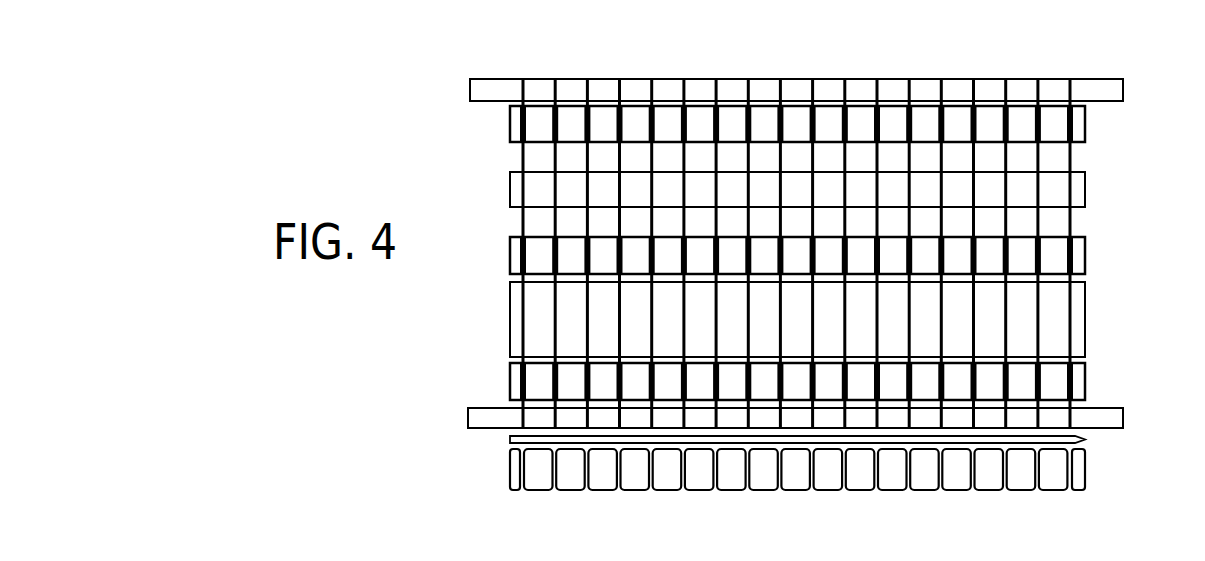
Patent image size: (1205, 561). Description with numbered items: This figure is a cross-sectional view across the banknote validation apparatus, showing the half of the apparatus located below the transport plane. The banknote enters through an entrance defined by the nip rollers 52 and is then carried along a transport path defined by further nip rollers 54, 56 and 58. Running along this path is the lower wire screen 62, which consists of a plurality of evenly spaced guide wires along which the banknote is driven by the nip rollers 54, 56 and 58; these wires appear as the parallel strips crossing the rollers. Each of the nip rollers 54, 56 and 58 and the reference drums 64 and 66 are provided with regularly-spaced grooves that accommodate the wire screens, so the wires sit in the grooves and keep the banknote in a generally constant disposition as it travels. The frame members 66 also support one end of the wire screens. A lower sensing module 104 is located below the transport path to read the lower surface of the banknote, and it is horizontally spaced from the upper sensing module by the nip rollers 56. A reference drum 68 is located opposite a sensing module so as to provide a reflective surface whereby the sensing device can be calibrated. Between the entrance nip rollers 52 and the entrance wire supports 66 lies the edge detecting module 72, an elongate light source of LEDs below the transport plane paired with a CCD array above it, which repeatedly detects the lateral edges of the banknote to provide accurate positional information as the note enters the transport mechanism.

The nip rollers 52 is at (1078, 470).
The nip rollers 54 is at (1078, 385).
The nip rollers 56 is at (1078, 258).
The nip rollers 58 is at (1078, 127).
The lower wire screen 62 is at (585, 222).
The reference drum 64 is at (1113, 81).
The frame members 66 is at (1118, 415).
The reference drum 68 is at (1078, 325).
The edge detecting module 72 is at (1083, 437).
The lower sensing module 104 is at (1078, 190).